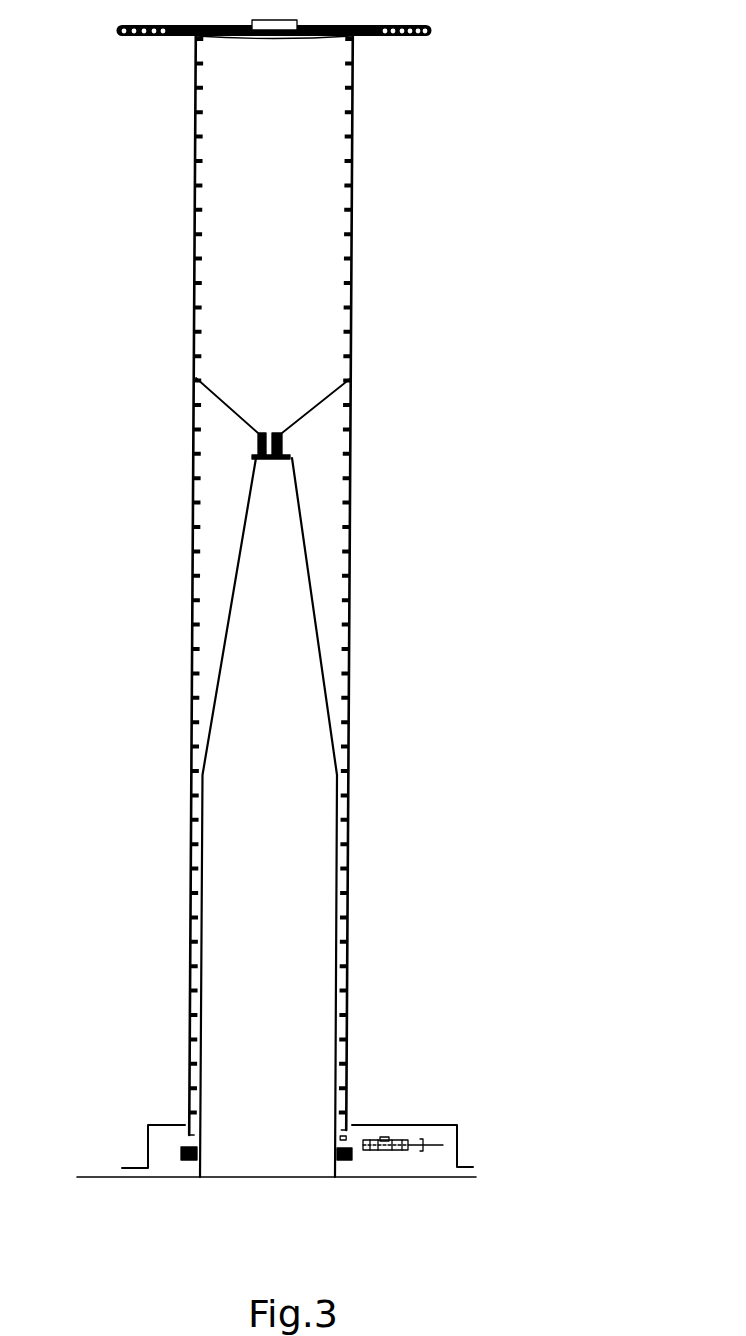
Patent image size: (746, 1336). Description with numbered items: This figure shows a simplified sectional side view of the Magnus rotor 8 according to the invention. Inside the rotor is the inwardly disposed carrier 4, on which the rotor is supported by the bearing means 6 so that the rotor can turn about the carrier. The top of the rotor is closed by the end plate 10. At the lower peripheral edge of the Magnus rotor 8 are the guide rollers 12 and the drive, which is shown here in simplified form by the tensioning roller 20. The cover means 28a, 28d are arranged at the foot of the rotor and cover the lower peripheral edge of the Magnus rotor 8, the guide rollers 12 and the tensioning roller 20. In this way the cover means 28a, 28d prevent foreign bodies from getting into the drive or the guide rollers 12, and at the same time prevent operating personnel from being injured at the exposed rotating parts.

The carrier 4 is at (275, 795).
The bearing means 6 is at (279, 433).
The Magnus rotor 8 is at (352, 188).
The end plate 10 is at (417, 37).
The guide rollers 12 is at (183, 1157).
The tensioning roller 20 is at (398, 1152).
The cover means 28a is at (413, 1125).
The cover means 28d is at (167, 1135).